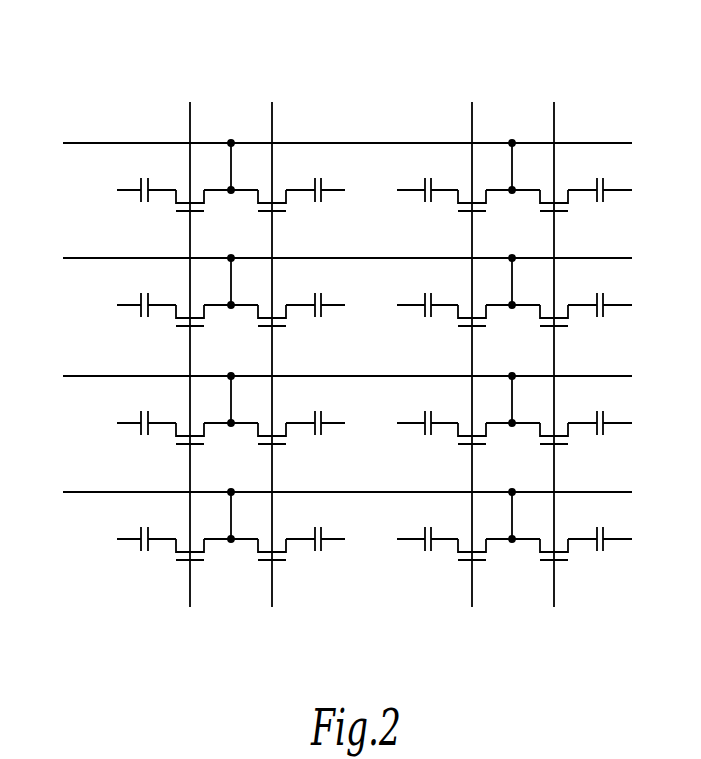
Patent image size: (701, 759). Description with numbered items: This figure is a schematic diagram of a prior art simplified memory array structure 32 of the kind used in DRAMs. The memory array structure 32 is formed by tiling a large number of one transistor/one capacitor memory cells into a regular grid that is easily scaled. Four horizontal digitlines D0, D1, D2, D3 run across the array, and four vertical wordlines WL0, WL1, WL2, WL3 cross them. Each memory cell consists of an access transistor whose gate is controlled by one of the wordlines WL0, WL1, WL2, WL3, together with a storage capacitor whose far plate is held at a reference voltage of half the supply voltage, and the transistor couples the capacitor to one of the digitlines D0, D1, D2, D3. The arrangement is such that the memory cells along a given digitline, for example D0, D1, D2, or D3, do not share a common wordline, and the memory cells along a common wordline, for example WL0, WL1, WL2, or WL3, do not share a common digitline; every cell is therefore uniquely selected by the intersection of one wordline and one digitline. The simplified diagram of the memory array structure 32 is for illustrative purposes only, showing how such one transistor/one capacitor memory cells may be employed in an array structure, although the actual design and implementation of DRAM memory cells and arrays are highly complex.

The memory array structure 32 is at (163, 91).
The wordline WL0 is at (192, 373).
The wordline WL1 is at (273, 373).
The wordline WL2 is at (473, 373).
The wordline WL3 is at (556, 373).
The digitline D0 is at (332, 495).
The digitline D1 is at (332, 379).
The digitline D2 is at (332, 261).
The digitline D3 is at (332, 146).